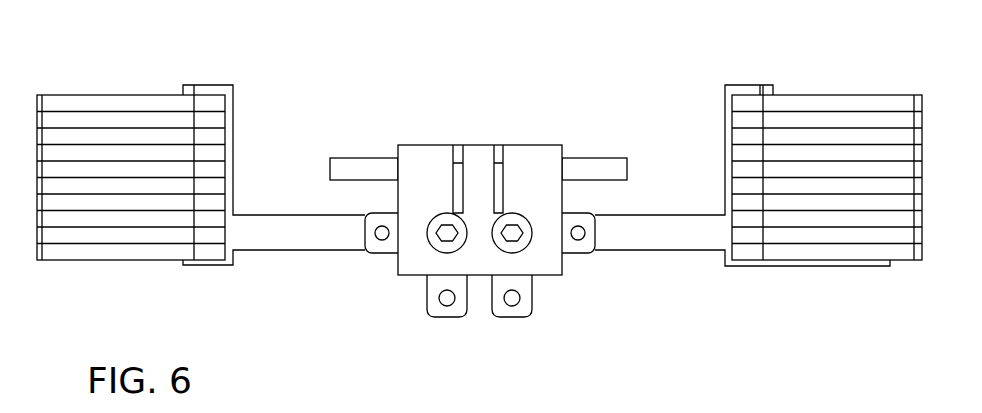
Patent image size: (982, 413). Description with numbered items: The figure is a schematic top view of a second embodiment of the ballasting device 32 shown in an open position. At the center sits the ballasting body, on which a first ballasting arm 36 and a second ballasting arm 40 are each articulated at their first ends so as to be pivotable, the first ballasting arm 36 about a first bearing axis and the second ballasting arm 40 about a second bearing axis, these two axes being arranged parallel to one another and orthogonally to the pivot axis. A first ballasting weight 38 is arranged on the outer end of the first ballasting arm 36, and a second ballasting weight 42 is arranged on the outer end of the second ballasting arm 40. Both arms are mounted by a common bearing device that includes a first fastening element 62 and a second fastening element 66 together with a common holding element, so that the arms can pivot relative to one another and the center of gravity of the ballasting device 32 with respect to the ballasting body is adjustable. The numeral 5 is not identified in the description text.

The fuse unit 5 is at (480, 190).
The ballasting device 32 is at (277, 93).
The first ballasting arm 36 is at (288, 230).
The first ballasting weight 38 is at (70, 91).
The second ballasting arm 40 is at (663, 240).
The second ballasting weight 42 is at (834, 91).
The first fastening element 62 is at (447, 234).
The second fastening element 66 is at (512, 234).